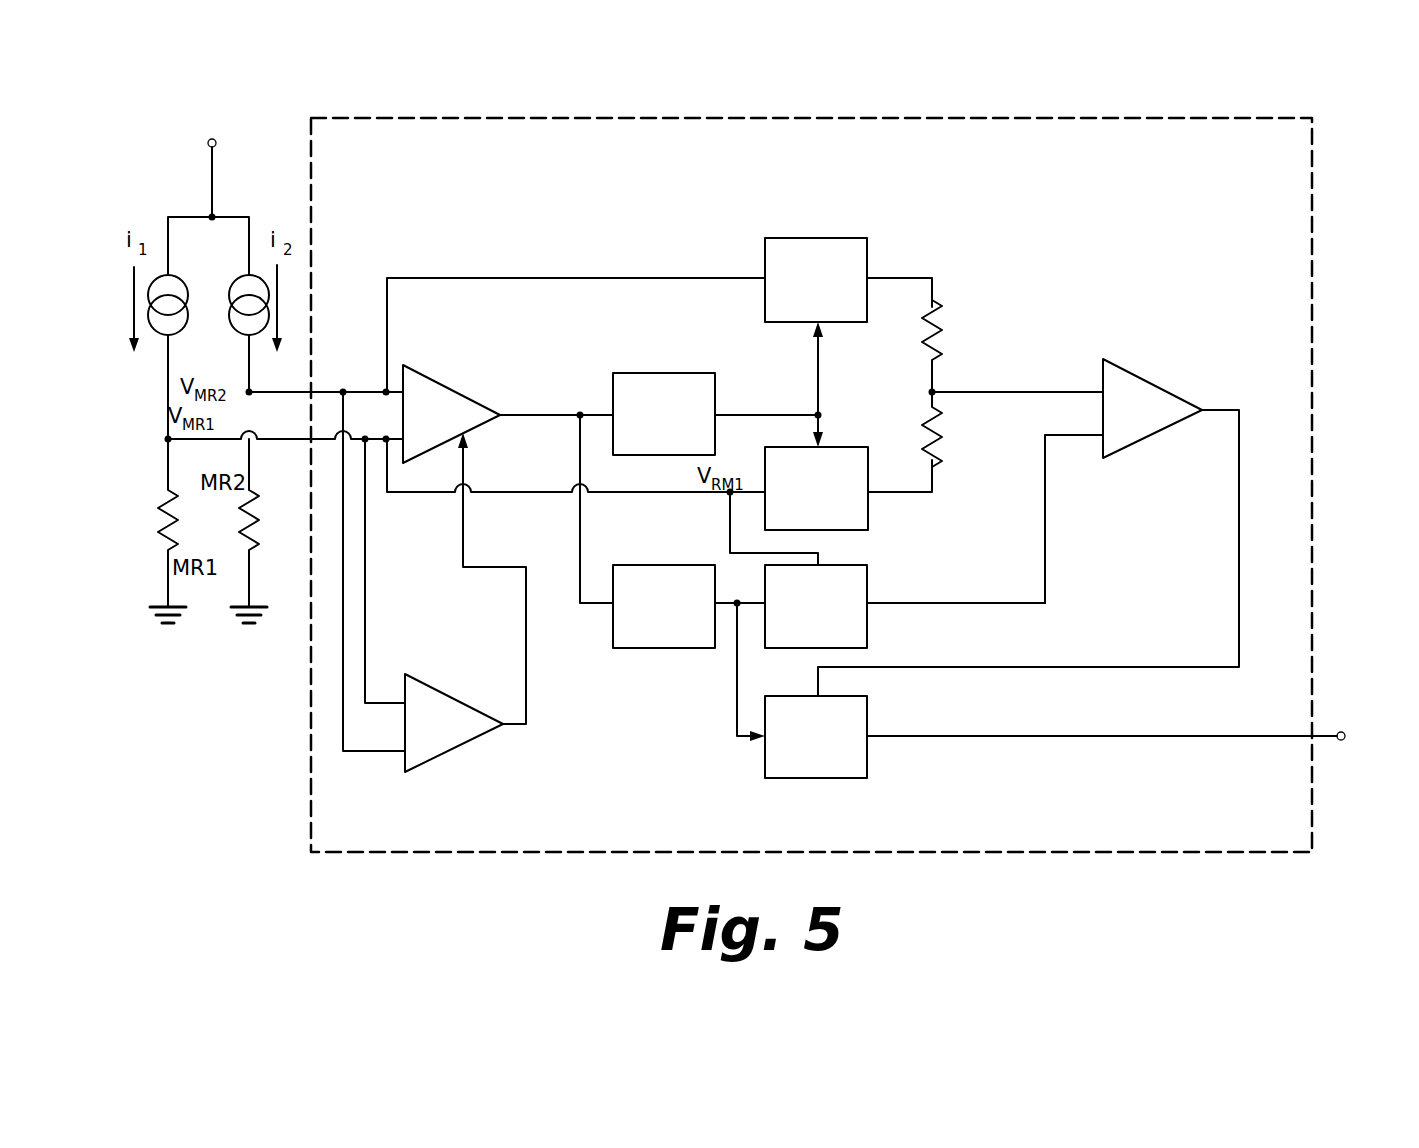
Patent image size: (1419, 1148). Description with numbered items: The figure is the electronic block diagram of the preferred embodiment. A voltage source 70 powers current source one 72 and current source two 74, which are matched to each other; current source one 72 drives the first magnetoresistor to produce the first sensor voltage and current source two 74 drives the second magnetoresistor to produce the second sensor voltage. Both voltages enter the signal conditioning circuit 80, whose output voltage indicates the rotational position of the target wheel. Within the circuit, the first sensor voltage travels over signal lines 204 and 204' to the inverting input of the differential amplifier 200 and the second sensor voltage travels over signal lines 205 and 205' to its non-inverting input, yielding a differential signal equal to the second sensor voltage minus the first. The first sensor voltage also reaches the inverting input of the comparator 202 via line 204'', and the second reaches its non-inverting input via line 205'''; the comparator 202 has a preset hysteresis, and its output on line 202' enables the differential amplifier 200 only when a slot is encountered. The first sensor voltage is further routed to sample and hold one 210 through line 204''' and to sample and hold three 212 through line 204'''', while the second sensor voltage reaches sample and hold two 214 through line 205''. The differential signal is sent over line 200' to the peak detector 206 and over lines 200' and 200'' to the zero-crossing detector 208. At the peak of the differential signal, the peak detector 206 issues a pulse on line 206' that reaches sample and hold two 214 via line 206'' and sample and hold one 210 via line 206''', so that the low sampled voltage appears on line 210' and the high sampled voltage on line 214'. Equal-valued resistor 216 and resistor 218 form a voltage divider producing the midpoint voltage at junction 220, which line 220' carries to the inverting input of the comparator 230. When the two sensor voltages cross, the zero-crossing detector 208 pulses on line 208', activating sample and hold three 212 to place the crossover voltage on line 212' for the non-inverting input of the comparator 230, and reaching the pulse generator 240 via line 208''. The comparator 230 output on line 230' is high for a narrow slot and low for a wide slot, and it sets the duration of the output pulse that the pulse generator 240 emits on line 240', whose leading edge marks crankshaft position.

The voltage source 70 is at (212, 165).
The current source1 72 is at (165, 275).
The current source2 74 is at (253, 275).
The signal conditioning circuit 80 is at (437, 117).
The differential amplifier 200 is at (453, 382).
The signal line 200' is at (556, 376).
The signal line 200'' is at (633, 509).
The comparator 202 is at (462, 691).
The signal line 202' is at (516, 578).
The signal line 204 is at (225, 456).
The signal line 204' is at (409, 490).
The signal line 204'' is at (413, 571).
The signal line 204''' is at (558, 497).
The signal line 204'''' is at (719, 527).
The signal line 205 is at (306, 310).
The signal line 205' is at (392, 313).
The signal line 205'' is at (576, 290).
The signal line 205''' is at (384, 605).
The peak detector 206 is at (654, 386).
The signal line 206' is at (741, 381).
The signal line 206'' is at (782, 368).
The signal line 206''' is at (865, 400).
The zero-crossing detector 208 is at (664, 644).
The signal line 208' is at (722, 566).
The signal line 208'' is at (712, 686).
The sample and hold1 210 is at (870, 490).
The signal line 210' is at (928, 462).
The sample and hold3 212 is at (870, 592).
The signal line 212' is at (973, 614).
The sample and hold2 214 is at (814, 243).
The signal line 214' is at (943, 254).
The resistor 216 is at (940, 305).
The resistor 218 is at (935, 410).
The junction 220 is at (1016, 354).
The signal line 220' is at (1084, 450).
The comparator 230 is at (1152, 375).
The signal line 230' is at (1028, 553).
The pulse generator 240 is at (840, 762).
The signal line 240' is at (1131, 723).